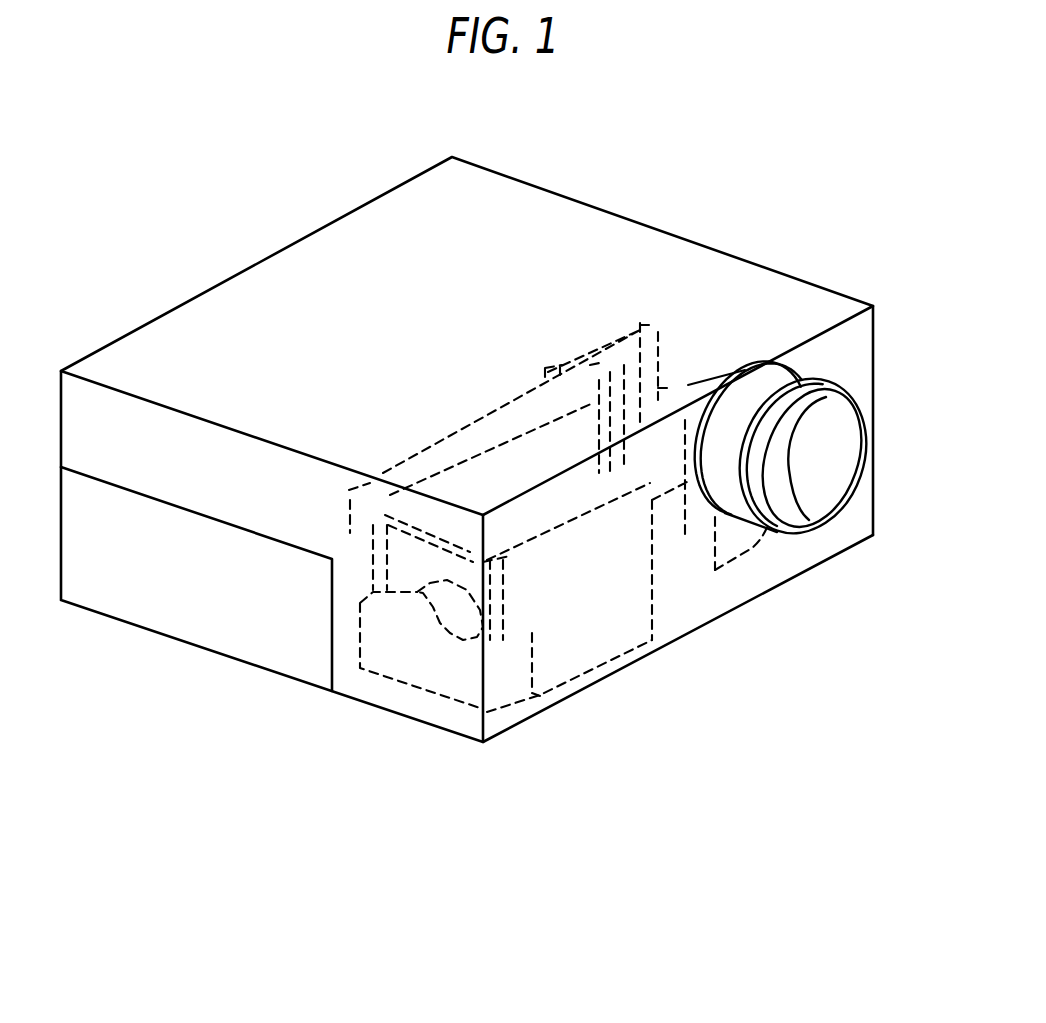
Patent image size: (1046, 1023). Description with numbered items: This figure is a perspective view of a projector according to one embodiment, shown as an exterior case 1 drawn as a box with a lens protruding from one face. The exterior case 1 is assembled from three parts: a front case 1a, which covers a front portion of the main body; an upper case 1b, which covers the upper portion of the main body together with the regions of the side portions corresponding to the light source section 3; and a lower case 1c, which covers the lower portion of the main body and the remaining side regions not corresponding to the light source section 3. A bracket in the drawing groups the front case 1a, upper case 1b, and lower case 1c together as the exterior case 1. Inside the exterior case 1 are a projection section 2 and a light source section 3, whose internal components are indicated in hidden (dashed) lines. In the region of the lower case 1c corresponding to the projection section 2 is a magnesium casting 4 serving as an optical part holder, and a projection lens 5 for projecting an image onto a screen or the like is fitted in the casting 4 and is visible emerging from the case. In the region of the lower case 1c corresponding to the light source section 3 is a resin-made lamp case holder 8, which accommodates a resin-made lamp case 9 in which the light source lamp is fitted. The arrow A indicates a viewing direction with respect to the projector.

The exterior case 1 is at (467, 511).
The front case 1a is at (500, 723).
The upper case 1b is at (262, 420).
The lower case 1c is at (267, 670).
The projection section 2 is at (808, 613).
The light source section 3 is at (645, 711).
The casting 4 is at (660, 331).
The projection lens 5 is at (790, 373).
The lamp case holder 8 is at (562, 686).
The lamp case 9 is at (525, 720).
The viewing direction A is at (395, 723).